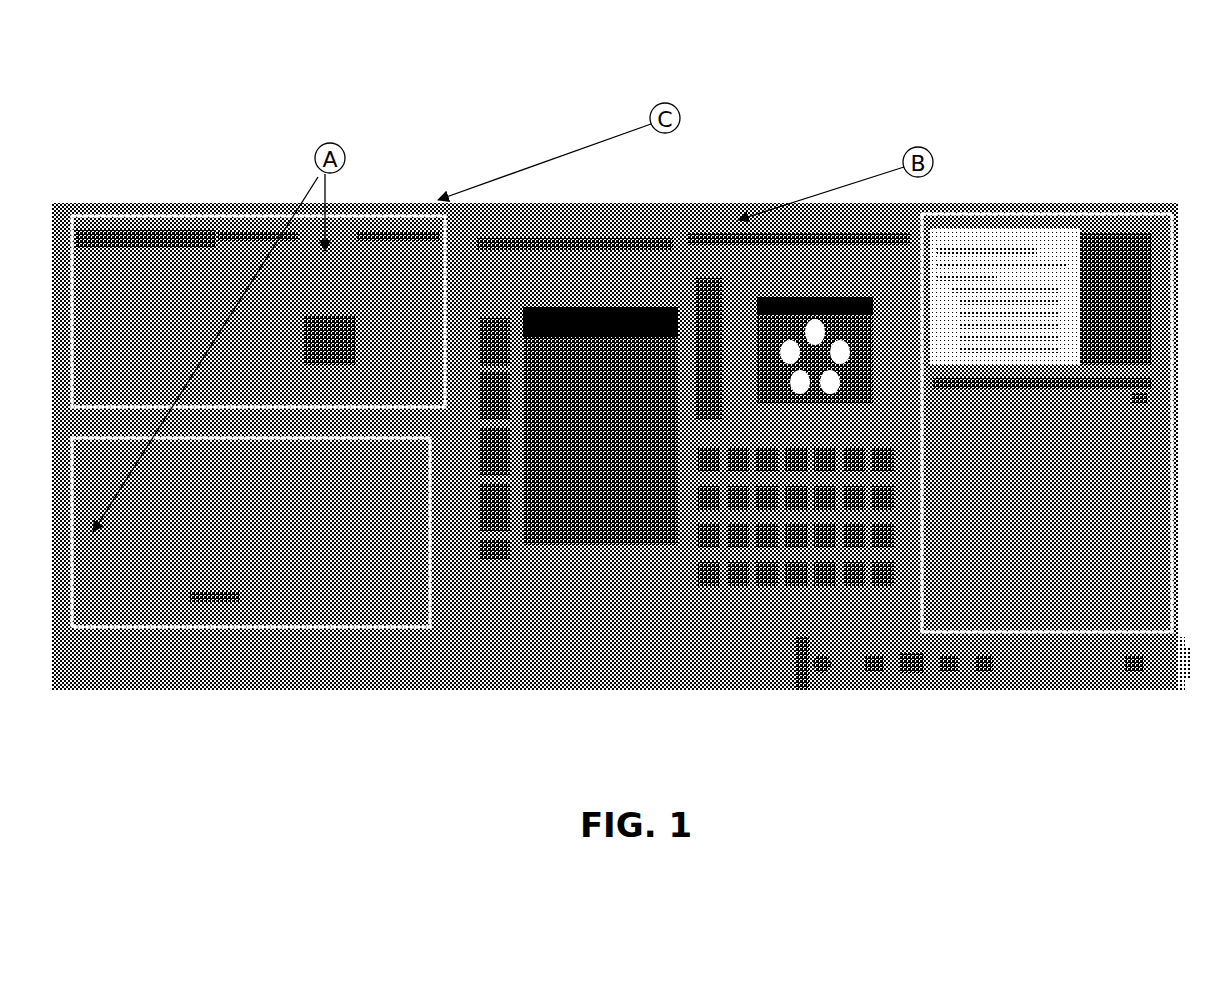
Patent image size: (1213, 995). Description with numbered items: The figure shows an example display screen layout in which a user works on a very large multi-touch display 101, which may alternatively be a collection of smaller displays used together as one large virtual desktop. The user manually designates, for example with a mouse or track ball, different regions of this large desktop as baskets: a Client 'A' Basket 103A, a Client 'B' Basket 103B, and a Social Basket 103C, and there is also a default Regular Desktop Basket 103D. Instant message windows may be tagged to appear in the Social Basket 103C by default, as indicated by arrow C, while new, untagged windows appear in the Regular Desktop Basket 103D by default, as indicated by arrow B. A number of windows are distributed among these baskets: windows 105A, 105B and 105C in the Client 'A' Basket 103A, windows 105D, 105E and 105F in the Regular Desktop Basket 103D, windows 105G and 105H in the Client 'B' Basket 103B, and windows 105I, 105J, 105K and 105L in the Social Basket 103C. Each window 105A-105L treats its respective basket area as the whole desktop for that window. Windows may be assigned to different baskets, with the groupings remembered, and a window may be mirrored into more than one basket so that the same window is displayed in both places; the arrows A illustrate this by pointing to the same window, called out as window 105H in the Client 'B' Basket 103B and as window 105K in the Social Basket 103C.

The display 101 is at (652, 32).
The Client 'A' Basket 103A is at (1047, 223).
The Client 'B' Basket 103B is at (427, 633).
The Social Basket 103C is at (140, 215).
The Regular Desktop Basket 103D is at (700, 223).
The window 105A is at (1092, 237).
The window 105B is at (1030, 257).
The window 105C is at (1105, 593).
The window 105D is at (870, 243).
The window 105E is at (555, 237).
The window 105F is at (757, 600).
The window 105G is at (255, 595).
The window 105H is at (102, 607).
The window 105I is at (100, 223).
The window 105J is at (237, 230).
The window 105K is at (345, 242).
The window 105L is at (395, 223).